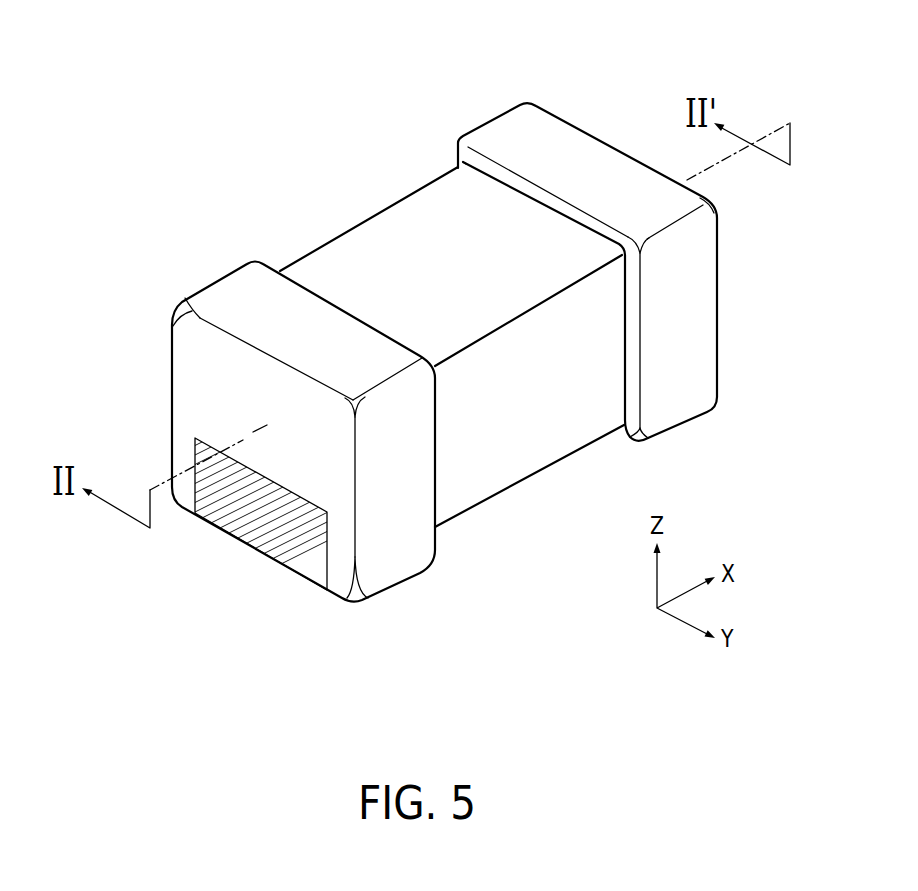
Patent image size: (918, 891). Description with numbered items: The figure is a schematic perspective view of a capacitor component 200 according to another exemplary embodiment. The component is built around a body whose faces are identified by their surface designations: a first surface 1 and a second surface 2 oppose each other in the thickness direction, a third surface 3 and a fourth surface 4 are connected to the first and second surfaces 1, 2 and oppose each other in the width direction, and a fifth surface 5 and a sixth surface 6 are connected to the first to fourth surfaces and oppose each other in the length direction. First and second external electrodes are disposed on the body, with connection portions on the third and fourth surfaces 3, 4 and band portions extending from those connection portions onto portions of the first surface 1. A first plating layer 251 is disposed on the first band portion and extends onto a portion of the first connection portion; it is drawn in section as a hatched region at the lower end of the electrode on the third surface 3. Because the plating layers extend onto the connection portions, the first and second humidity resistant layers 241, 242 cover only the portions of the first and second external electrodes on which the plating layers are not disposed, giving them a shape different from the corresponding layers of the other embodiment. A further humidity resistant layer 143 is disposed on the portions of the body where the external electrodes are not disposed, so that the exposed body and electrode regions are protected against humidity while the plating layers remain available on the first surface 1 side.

The capacitor component 200 is at (235, 117).
The first surface 1 is at (487, 447).
The second surface 2 is at (458, 223).
The fifth surface 5 is at (549, 416).
The sixth surface 6 is at (399, 247).
The humidity resistant layer 143 is at (338, 265).
The third surface 3 is at (206, 385).
The fourth surface 4 is at (668, 287).
The first humidity resistant layer 241 is at (233, 297).
The second humidity resistant layer 242 is at (505, 143).
The first plating layer 251 is at (260, 524).